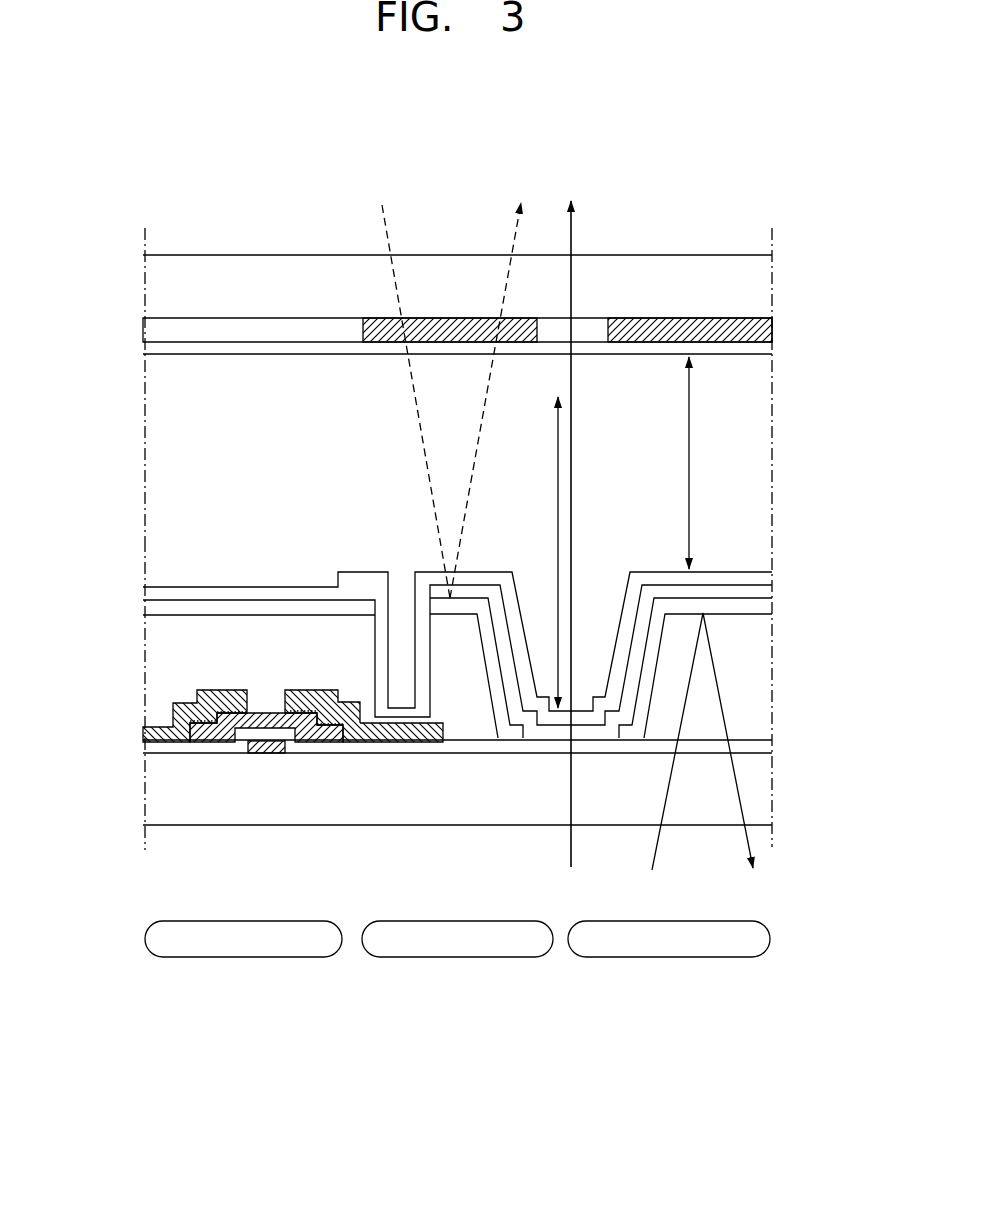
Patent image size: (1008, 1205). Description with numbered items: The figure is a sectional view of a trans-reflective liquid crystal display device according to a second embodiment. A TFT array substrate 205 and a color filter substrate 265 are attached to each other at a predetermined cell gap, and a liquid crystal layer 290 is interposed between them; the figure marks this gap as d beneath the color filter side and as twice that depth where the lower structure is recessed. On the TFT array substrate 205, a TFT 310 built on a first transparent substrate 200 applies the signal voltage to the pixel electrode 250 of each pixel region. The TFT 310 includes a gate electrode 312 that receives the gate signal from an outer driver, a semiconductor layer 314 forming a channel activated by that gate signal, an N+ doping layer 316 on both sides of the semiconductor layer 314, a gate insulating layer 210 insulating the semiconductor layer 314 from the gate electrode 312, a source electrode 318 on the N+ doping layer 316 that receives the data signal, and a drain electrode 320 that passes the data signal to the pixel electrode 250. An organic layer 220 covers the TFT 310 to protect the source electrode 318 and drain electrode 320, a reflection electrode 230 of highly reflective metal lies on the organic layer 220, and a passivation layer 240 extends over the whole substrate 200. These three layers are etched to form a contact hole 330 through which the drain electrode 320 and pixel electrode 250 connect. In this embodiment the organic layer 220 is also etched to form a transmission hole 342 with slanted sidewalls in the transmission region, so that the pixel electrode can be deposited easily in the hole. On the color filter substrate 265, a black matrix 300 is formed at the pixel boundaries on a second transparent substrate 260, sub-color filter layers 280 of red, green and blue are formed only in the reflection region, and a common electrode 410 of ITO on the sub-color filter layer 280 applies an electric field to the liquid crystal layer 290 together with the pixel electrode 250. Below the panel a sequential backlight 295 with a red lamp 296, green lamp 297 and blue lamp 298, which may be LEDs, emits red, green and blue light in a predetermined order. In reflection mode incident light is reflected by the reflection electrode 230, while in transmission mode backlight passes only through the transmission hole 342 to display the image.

The first transparent substrate 200 is at (763, 790).
The TFT array substrate 205 is at (135, 578).
The gate insulating layer 210 is at (763, 745).
The organic layer 220 is at (763, 676).
The reflection electrode 230 is at (762, 603).
The passivation layer 240 is at (763, 590).
The pixel electrode 250 is at (762, 575).
The second transparent substrate 260 is at (763, 278).
The color filter substrate 265 is at (137, 252).
The sub-color filter layer 280 is at (768, 326).
The liquid crystal layer 290 is at (763, 494).
The sequential backlight 295 is at (497, 952).
The red lamp 296 is at (243, 975).
The green lamp 297 is at (457, 975).
The blue lamp 298 is at (669, 975).
The black matrix 300 is at (153, 331).
The TFT 310 is at (221, 778).
The gate electrode 312 is at (268, 754).
The semiconductor layer 314 is at (327, 742).
The N+ doping layer 316 is at (213, 742).
The source electrode 318 is at (167, 742).
The drain electrode 320 is at (403, 742).
The contact hole 330 is at (400, 578).
The transmission hole 342 is at (601, 580).
The common electrode 410 is at (768, 352).